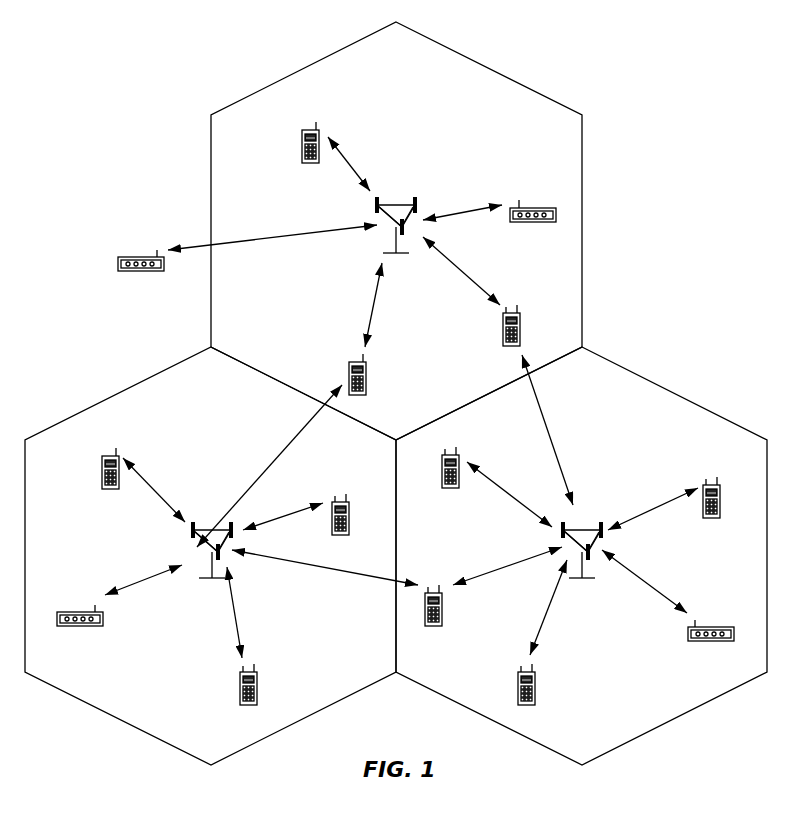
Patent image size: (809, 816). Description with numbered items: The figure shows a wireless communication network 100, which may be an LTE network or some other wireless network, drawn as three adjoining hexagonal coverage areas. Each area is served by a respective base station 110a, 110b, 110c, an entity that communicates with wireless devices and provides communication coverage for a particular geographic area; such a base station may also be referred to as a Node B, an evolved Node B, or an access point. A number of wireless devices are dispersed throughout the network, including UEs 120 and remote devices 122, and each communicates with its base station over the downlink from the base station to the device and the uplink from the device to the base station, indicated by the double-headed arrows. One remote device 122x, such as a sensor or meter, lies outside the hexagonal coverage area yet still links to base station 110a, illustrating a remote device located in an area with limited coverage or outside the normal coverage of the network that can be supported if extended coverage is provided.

The wireless communication network 100 is at (709, 80).
The base station 110a is at (392, 204).
The base station 110b is at (207, 529).
The base station 110c is at (587, 529).
The UE 120 is at (302, 140).
The remote device 122 is at (528, 207).
The remote device 122x is at (140, 257).